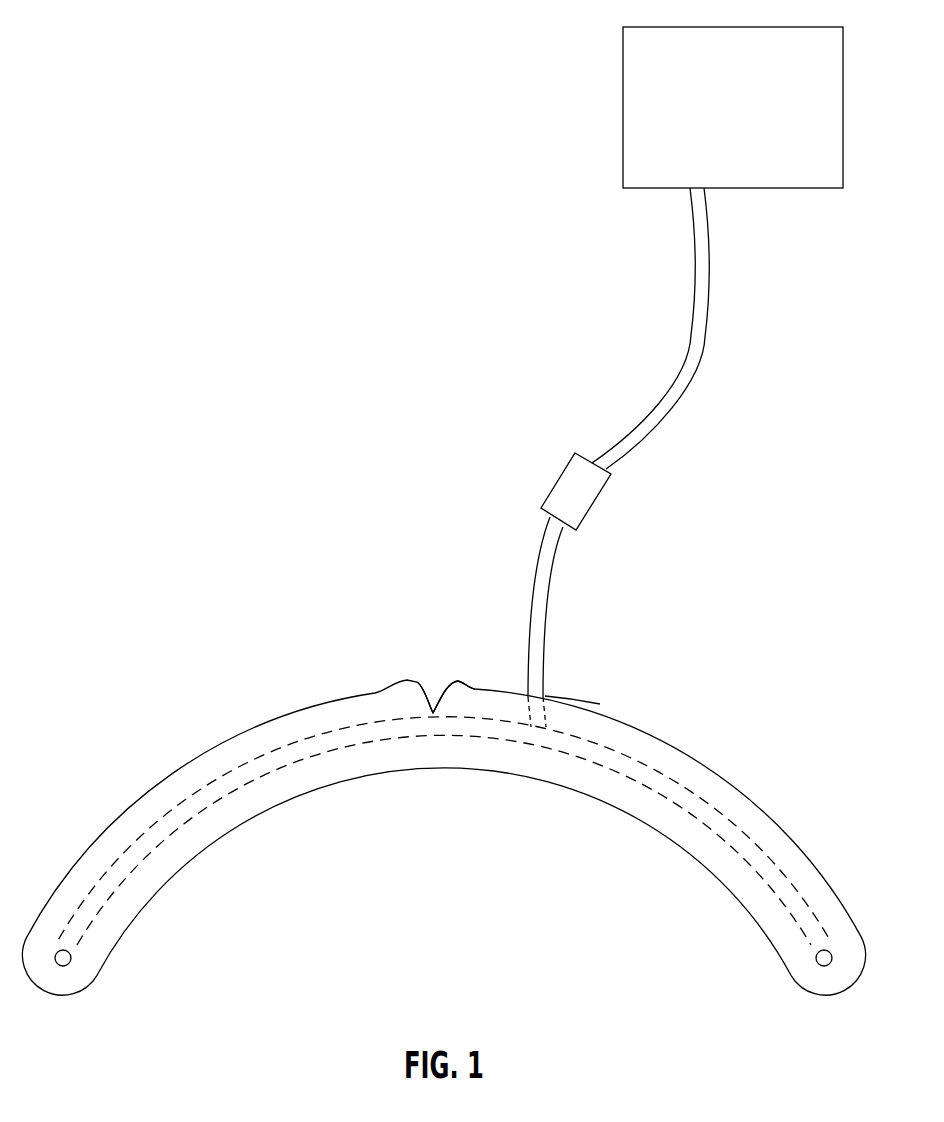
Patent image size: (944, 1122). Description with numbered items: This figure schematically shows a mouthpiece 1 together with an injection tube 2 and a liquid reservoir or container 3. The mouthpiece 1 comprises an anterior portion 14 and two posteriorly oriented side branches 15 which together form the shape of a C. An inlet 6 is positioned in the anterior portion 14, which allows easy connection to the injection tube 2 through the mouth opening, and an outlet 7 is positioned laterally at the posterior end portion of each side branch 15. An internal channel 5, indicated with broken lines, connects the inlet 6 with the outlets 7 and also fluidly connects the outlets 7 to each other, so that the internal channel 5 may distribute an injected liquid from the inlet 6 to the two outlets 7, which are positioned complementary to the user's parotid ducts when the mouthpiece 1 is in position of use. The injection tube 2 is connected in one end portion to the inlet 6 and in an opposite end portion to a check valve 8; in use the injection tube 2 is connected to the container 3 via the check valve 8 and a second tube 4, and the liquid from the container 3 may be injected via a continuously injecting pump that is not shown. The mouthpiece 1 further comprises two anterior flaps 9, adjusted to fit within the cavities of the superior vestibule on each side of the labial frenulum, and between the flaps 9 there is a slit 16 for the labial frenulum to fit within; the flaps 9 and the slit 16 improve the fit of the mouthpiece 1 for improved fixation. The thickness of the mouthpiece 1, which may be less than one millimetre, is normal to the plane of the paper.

The mouthpiece 1 is at (310, 722).
The injection tube 2 is at (537, 618).
The liquid reservoir or container 3 is at (622, 128).
The second tube 4 is at (687, 348).
The internal channel 5 is at (170, 820).
The inlet 6 is at (527, 697).
The outlet 7 is at (71, 960).
The check valve 8 is at (569, 488).
The anterior flap 9 is at (457, 690).
The anterior portion 14 is at (572, 717).
The side branch 15 is at (103, 848).
The slit 16 is at (433, 713).